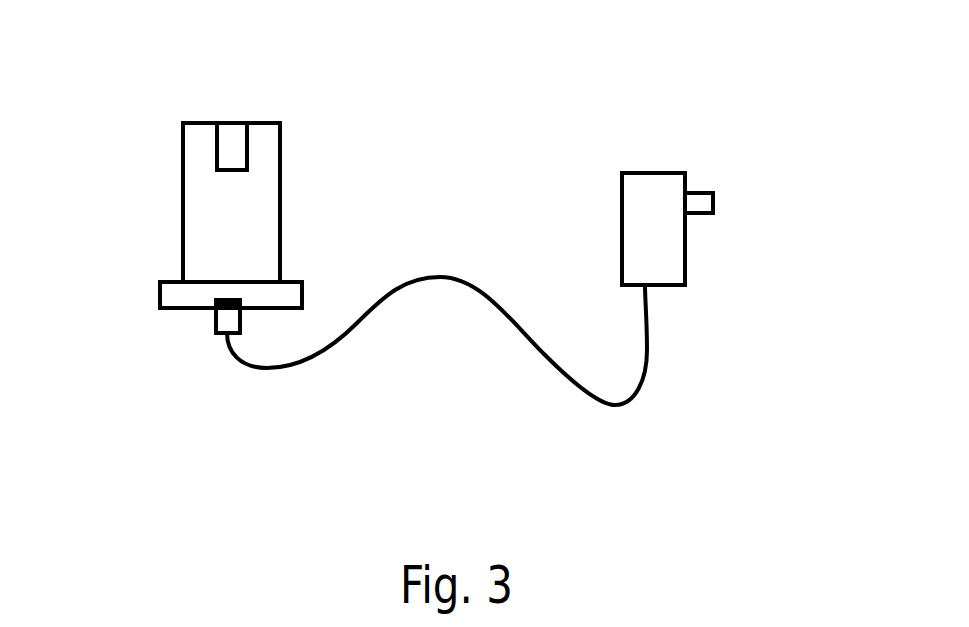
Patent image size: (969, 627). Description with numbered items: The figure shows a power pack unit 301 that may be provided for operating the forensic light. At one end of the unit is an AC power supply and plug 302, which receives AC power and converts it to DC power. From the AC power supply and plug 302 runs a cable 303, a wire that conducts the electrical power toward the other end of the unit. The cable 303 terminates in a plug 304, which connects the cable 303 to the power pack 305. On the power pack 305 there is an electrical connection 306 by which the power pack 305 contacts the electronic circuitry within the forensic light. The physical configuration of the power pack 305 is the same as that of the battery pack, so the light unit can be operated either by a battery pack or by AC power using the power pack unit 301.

The power pack unit 301 is at (455, 225).
The AC power supply and plug 302 is at (670, 236).
The cable 303 is at (460, 278).
The plug 304 is at (226, 316).
The power pack 305 is at (217, 207).
The electrical connection 306 is at (232, 140).